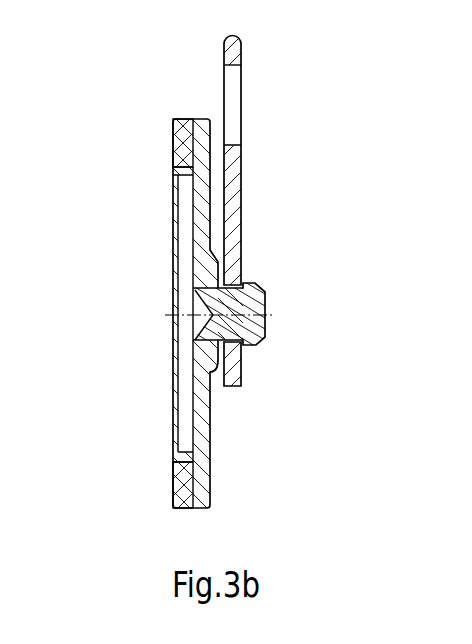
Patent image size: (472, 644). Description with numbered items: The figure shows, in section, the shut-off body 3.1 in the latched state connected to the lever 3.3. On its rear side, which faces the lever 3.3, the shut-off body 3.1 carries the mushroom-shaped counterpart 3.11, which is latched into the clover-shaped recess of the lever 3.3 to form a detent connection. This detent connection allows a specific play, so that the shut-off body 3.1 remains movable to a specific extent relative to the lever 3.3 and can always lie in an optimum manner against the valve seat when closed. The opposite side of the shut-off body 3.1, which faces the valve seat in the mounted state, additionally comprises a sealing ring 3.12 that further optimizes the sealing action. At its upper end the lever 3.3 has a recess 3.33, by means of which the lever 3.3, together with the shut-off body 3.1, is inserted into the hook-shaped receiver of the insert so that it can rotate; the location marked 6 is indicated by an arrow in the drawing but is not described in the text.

The shut-off body 3.1 is at (173, 340).
The counterpart 3.11 is at (258, 283).
The sealing ring 3.12 is at (180, 140).
The lever 3.3 is at (240, 192).
The recess 3.33 is at (233, 62).
The connection point 6 is at (250, 355).